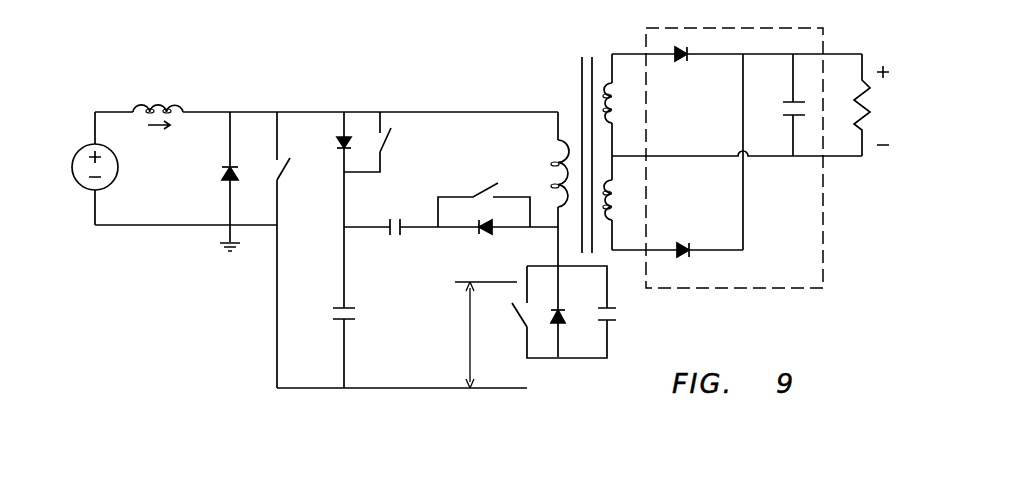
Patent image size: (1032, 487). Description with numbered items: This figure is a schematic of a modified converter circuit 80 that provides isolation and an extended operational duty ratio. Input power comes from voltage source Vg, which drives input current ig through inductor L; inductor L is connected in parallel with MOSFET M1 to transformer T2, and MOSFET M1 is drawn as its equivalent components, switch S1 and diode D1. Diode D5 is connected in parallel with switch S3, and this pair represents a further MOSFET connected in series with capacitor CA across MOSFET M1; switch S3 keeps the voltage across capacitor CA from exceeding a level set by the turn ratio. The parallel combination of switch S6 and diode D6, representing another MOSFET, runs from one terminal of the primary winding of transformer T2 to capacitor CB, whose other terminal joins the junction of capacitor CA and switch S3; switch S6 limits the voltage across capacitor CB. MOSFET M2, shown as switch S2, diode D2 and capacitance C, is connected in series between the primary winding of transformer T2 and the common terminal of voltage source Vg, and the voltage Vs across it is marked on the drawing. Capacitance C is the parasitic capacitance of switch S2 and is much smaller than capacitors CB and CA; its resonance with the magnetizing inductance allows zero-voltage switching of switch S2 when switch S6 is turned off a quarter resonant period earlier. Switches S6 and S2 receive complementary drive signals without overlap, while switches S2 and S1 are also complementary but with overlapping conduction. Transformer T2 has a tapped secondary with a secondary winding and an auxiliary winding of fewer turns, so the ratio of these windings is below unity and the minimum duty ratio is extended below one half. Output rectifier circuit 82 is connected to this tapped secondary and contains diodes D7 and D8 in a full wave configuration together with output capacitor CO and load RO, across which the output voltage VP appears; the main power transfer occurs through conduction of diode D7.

The modified converter circuit 80 is at (447, 48).
The output rectifier circuit 82 is at (834, 216).
The voltage source Vg is at (82, 167).
The inductor L is at (158, 98).
The input current ig is at (159, 139).
The MOSFET M1 is at (249, 235).
The diode D1 is at (218, 181).
The switch S1 is at (290, 250).
The diode D5 is at (331, 145).
The capacitor CA is at (357, 316).
The switch S3 is at (379, 142).
The capacitor CB is at (391, 241).
The switch S6 is at (484, 198).
The diode D6 is at (480, 242).
The transformer T2 is at (578, 74).
The voltage Vs is at (480, 335).
The MOSFET M2 is at (562, 328).
The switch S2 is at (509, 320).
The capacitance C is at (616, 315).
The diode D2 is at (570, 323).
The diode D7 is at (676, 69).
The diode D8 is at (692, 262).
The capacitor CO is at (780, 105).
The load RO is at (847, 105).
The output voltage VP is at (887, 105).